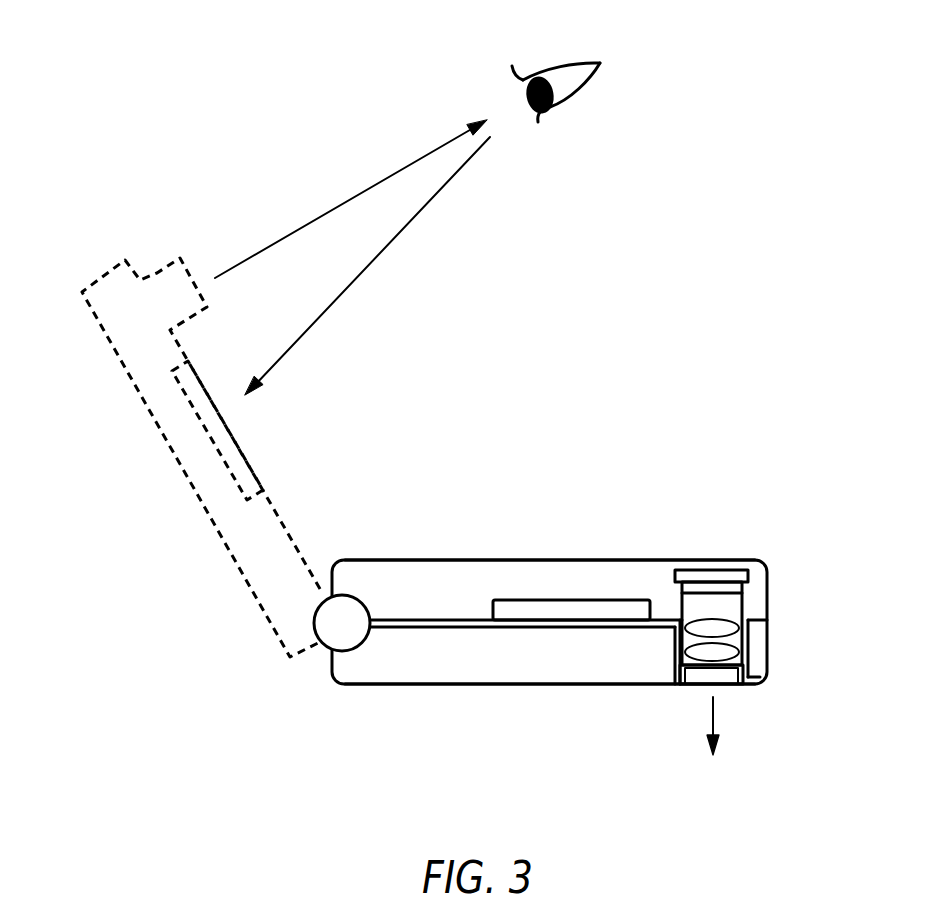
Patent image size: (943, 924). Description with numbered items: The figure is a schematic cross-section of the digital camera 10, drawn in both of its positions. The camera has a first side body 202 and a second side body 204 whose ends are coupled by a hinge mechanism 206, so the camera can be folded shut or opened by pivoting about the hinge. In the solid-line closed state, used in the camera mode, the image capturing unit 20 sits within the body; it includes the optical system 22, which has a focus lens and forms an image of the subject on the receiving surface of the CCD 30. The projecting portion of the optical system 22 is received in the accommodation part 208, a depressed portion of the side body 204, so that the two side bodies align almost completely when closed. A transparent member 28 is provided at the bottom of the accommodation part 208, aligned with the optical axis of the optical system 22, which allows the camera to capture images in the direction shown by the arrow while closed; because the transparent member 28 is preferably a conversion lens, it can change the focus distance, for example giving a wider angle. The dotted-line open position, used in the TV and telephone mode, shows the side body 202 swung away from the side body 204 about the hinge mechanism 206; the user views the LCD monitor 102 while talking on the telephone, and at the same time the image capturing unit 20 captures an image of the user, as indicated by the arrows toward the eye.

The digital camera 10 is at (172, 38).
The image capturing unit 20 is at (718, 545).
The optical system 22 is at (720, 608).
The transparent member 28 is at (727, 675).
The CCD 30 is at (748, 588).
The LCD monitor 102 is at (538, 605).
The side body 202 is at (632, 570).
The side body 204 is at (468, 668).
The hinge mechanism 206 is at (333, 633).
The accommodation part 208 is at (743, 653).